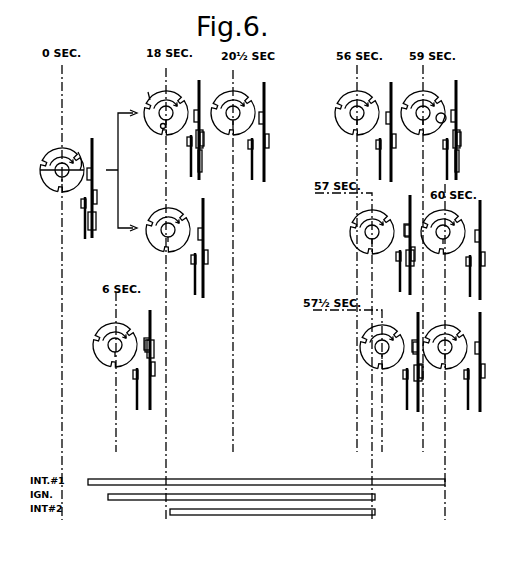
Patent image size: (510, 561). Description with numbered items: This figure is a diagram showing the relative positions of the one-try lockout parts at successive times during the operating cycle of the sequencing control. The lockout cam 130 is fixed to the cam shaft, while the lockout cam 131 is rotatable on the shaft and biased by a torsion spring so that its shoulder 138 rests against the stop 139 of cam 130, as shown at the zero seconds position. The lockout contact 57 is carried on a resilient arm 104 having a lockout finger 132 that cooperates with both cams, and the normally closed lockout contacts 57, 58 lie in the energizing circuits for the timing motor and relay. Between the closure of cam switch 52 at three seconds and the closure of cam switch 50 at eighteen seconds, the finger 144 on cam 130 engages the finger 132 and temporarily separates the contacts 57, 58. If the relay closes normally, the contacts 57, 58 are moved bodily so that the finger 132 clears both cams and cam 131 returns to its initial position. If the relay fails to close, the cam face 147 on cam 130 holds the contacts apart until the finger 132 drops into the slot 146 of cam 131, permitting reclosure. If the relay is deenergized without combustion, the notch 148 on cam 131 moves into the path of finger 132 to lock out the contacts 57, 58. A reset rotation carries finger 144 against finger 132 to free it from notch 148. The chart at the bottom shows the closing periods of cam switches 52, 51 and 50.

The lockout cam 130 is at (158, 95).
The lockout cam 131 is at (158, 124).
The lockout finger 132 is at (91, 150).
The lockout contact 58 is at (191, 150).
The lockout contact 57 is at (92, 220).
The resilient arm 104 is at (200, 160).
The slot 146 is at (446, 118).
The notch 148 is at (148, 335).
The cam face 147 is at (44, 158).
The finger 144 is at (78, 148).
The shoulder 138 is at (147, 102).
The stop 139 is at (150, 214).
The cam switch 52 is at (255, 481).
The cam switch 51 is at (230, 497).
The cam switch 50 is at (261, 512).